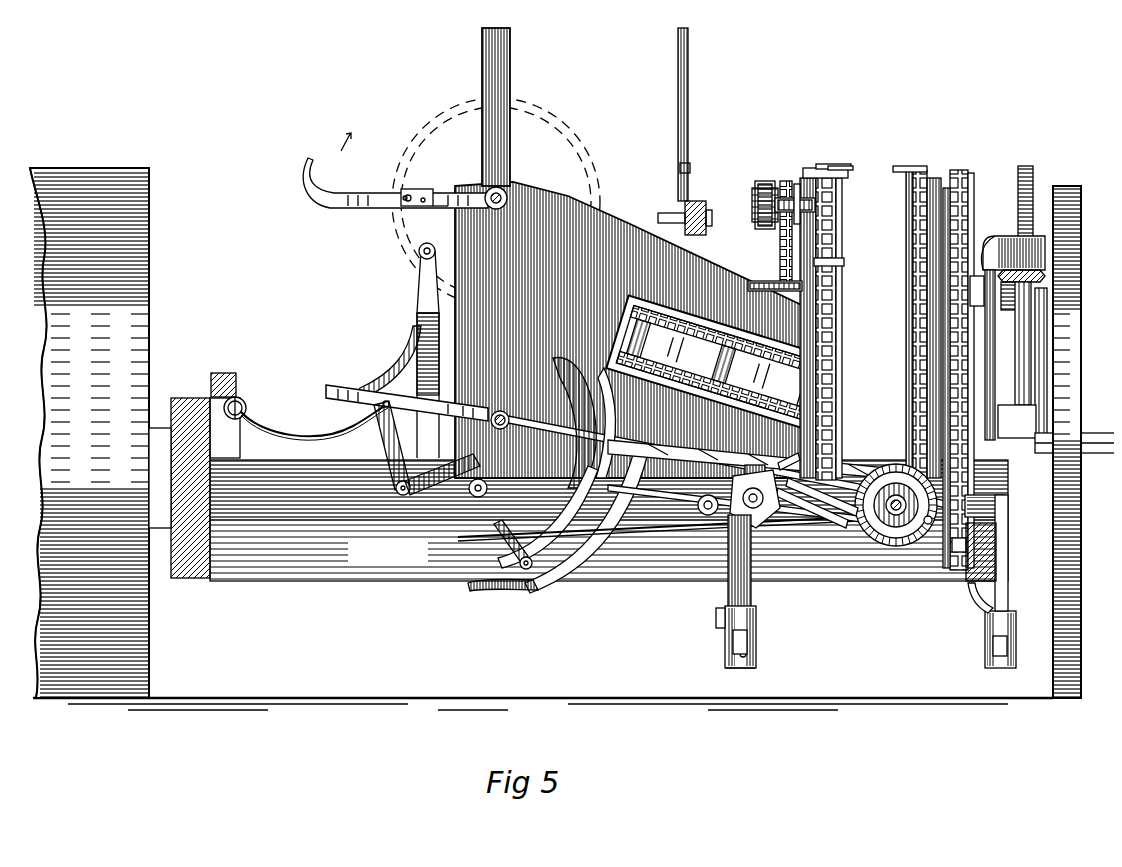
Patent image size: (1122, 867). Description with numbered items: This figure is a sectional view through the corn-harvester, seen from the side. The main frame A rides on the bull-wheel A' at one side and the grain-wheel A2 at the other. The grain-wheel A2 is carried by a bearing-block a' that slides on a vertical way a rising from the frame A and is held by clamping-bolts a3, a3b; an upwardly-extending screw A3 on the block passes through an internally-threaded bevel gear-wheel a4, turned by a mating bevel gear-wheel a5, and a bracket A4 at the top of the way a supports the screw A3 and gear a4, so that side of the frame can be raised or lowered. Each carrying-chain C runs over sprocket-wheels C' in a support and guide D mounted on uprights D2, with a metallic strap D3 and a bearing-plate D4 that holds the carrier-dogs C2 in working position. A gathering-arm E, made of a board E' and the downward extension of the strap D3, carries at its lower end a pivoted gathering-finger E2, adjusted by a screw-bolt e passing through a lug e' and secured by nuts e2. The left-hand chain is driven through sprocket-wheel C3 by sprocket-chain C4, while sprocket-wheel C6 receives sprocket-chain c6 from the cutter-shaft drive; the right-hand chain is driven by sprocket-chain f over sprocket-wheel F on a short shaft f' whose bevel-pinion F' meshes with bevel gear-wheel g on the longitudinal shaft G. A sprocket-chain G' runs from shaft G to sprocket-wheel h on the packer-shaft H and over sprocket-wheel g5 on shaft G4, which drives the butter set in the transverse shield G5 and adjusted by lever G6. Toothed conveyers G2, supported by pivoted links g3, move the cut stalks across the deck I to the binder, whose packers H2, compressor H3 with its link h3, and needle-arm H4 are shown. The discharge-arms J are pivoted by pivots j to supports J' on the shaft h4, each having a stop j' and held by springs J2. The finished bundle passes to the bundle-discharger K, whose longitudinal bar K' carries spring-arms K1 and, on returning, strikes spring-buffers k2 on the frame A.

The main frame A is at (609, 520).
The bull-wheel A' is at (102, 433).
The grain-wheel A2 is at (1069, 425).
The screw A3 is at (1023, 184).
The bracket A4 is at (1037, 245).
The vertical way a is at (1042, 355).
The bearing-block a' is at (1056, 429).
The clamping-bolts a3 is at (723, 364).
The bearing a3b is at (974, 283).
The internally-threaded bevel gear-wheel a4 is at (1037, 268).
The bevel gear-wheel a5 is at (1009, 288).
The carrying-chain C is at (833, 327).
The sprocket-wheels C' is at (845, 292).
The carrier-dogs C2 is at (843, 162).
The sprocket-wheel C3 is at (748, 192).
The sprocket-chain C4 is at (759, 217).
The sprocket-wheel C6 is at (774, 180).
The sprocket-chain c6 is at (788, 176).
The guide-support D is at (825, 165).
The uprights D2 is at (775, 271).
The metallic strap D3 is at (984, 598).
The bearing-plate D4 is at (812, 156).
The gathering-arm E is at (870, 637).
The board E' is at (753, 566).
The gathering-finger E2 is at (708, 618).
The screw-bolt e is at (871, 661).
The lug e' is at (740, 680).
The nuts e2 is at (725, 640).
The sprocket-wheel F is at (954, 397).
The bevel-pinion F' is at (938, 581).
The sprocket-chain f is at (923, 319).
The short shaft f' is at (997, 553).
The longitudinal shaft G is at (939, 516).
The sprocket-chain G' is at (668, 540).
The toothed conveyers G2 is at (845, 450).
The shaft G4 is at (738, 505).
The transverse vertical shield G5 is at (631, 330).
The lever G6 is at (599, 131).
The bevel gear-wheel g is at (860, 532).
The pivoted links g3 is at (787, 500).
The sprocket-wheel g5 is at (698, 508).
The packer-shaft H is at (588, 520).
The packers H2 is at (560, 393).
The compressor H3 is at (390, 362).
The needle-arm H4 is at (540, 560).
The sprocket-wheel h is at (546, 493).
The link h3 is at (385, 440).
The shaft h4 is at (478, 184).
The deck I is at (850, 468).
The discharge-arms J is at (395, 170).
The supports J' is at (440, 218).
The springs J2 is at (405, 181).
The pivots j is at (384, 224).
The stop j' is at (414, 220).
The bundle-discharger K is at (194, 460).
The longitudinal bar K' is at (223, 383).
The spring K1 is at (262, 420).
The spring-buffers k2 is at (215, 412).